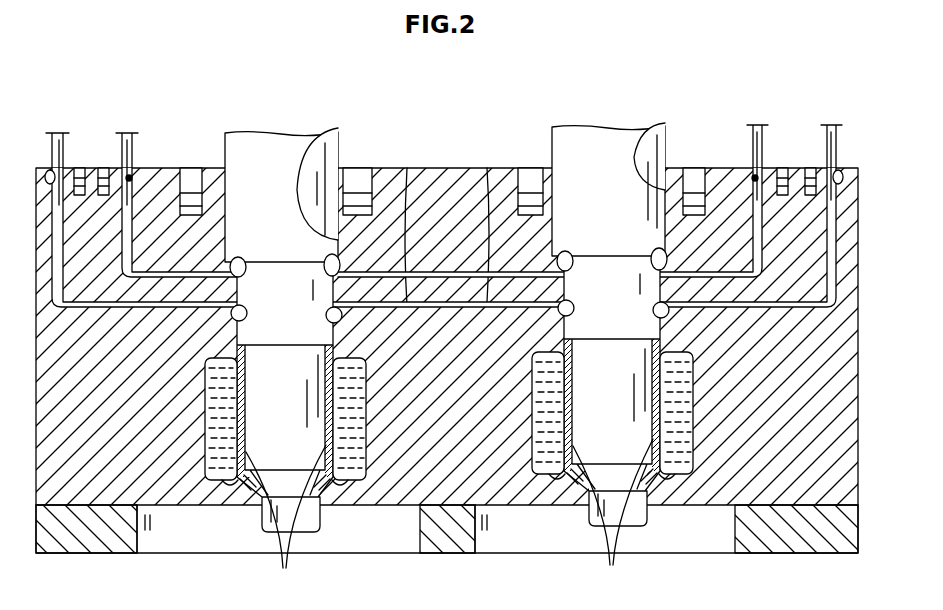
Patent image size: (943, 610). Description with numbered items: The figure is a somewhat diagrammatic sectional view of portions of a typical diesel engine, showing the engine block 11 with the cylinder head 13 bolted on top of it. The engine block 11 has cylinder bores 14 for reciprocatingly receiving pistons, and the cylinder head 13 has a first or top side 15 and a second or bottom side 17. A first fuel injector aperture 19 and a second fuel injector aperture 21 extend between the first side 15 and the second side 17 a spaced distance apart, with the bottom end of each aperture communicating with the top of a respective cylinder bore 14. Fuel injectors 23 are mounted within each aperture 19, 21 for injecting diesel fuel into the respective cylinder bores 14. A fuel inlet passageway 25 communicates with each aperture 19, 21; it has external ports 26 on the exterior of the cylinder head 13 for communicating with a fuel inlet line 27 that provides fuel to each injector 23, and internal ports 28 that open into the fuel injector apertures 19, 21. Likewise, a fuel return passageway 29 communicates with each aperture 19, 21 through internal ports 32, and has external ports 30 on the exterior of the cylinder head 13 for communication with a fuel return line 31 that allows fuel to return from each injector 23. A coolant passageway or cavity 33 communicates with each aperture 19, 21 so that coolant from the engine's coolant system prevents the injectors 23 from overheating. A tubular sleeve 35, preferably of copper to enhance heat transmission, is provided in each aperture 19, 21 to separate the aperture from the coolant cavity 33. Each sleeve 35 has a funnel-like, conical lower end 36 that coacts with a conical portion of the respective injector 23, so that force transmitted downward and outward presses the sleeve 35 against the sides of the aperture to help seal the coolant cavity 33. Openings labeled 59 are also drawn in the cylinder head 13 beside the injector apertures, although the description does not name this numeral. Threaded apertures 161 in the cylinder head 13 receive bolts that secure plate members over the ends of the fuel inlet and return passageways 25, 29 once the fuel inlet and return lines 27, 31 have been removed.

The engine block 11 is at (447, 545).
The cylinder head 13 is at (517, 540).
The cylinder bores 14 is at (144, 545).
The first or top side 15 is at (440, 168).
The second or bottom side 17 is at (390, 507).
The first fuel injector aperture 19 is at (305, 142).
The second fuel injector aperture 21 is at (640, 146).
The fuel injectors 23 is at (262, 136).
The fuel inlet passageway 25 is at (487, 168).
The external ports 26 is at (132, 176).
The fuel inlet line 27 is at (132, 136).
The internal ports 28 is at (234, 258).
The fuel return passageway 29 is at (407, 168).
The external ports 30 is at (47, 172).
The fuel return line 31 is at (63, 133).
The internal ports 32 is at (234, 318).
The coolant passageway or cavity 33 is at (230, 482).
The tubular sleeve 35 is at (275, 587).
The funnel-like, conical lower end 36 is at (246, 492).
The mounting hole 59 is at (530, 168).
The threaded apertures 161 is at (78, 166).